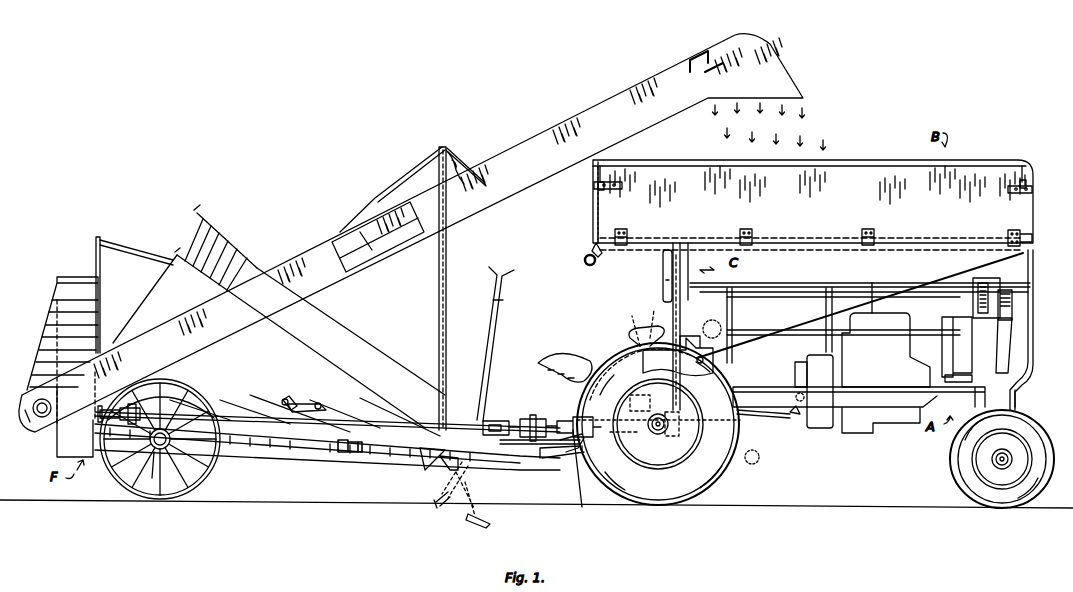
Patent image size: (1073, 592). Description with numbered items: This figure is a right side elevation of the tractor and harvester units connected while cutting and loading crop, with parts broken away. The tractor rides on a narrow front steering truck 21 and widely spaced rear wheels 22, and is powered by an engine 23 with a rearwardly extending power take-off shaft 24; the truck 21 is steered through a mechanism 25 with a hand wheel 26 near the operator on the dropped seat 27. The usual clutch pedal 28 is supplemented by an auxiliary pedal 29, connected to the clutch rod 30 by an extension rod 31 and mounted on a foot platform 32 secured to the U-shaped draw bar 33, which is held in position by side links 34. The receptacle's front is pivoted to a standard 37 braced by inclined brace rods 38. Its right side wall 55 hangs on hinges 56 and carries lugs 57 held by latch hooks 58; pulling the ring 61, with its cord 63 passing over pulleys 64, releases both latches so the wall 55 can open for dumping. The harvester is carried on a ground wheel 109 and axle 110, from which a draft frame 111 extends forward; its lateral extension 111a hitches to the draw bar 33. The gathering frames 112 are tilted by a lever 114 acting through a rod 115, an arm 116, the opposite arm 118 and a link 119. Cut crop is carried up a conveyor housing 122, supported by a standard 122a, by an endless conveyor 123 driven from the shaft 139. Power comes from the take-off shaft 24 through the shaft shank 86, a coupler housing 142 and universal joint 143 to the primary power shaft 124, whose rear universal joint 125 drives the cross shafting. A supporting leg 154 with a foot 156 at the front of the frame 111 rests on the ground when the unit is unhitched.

The steering truck 21 is at (955, 470).
The rear wheels 22 is at (718, 480).
The engine 23 is at (862, 433).
The power take-off shaft 24 is at (660, 418).
The steering mechanism 25 is at (990, 290).
The hand wheel 26 is at (662, 280).
The seat 27 is at (546, 362).
The clutch pedal 28 is at (692, 356).
The auxiliary pedal 29 is at (640, 455).
The clutch rod 30 is at (780, 418).
The extension rod 31 is at (753, 460).
The foot platform 32 is at (580, 456).
The draw bar 33 is at (560, 462).
The side links 34 is at (582, 479).
The standard 37 is at (1028, 330).
The brace rods 38 is at (842, 310).
The right side wall 55 is at (965, 176).
The hinges 56 is at (755, 230).
The lugs 57 is at (622, 185).
The latch hooks 58 is at (596, 186).
The ring 61 is at (596, 262).
The cord 63 is at (925, 252).
The pulleys 64 is at (604, 248).
The shaft shank 86 is at (568, 420).
The ground wheel 109 is at (210, 476).
The axle 110 is at (152, 480).
The draft frame 111 is at (318, 462).
The auxiliary frame 111a is at (418, 460).
The gathering frames 112 is at (372, 372).
The lever 114 is at (504, 322).
The rod 115 is at (395, 400).
The arm 116 is at (280, 400).
The arm 118 is at (300, 402).
The link 119 is at (327, 415).
The conveyor housing 122 is at (289, 265).
The standard 122a is at (450, 272).
The endless conveyor 123 is at (389, 200).
The primary power shaft 124 is at (368, 454).
The universal joint 125 is at (178, 394).
The shaft 139 is at (40, 417).
The coupler housing 142 is at (536, 418).
The universal joint 143 is at (498, 420).
The supporting leg 154 is at (464, 494).
The foot 156 is at (430, 506).